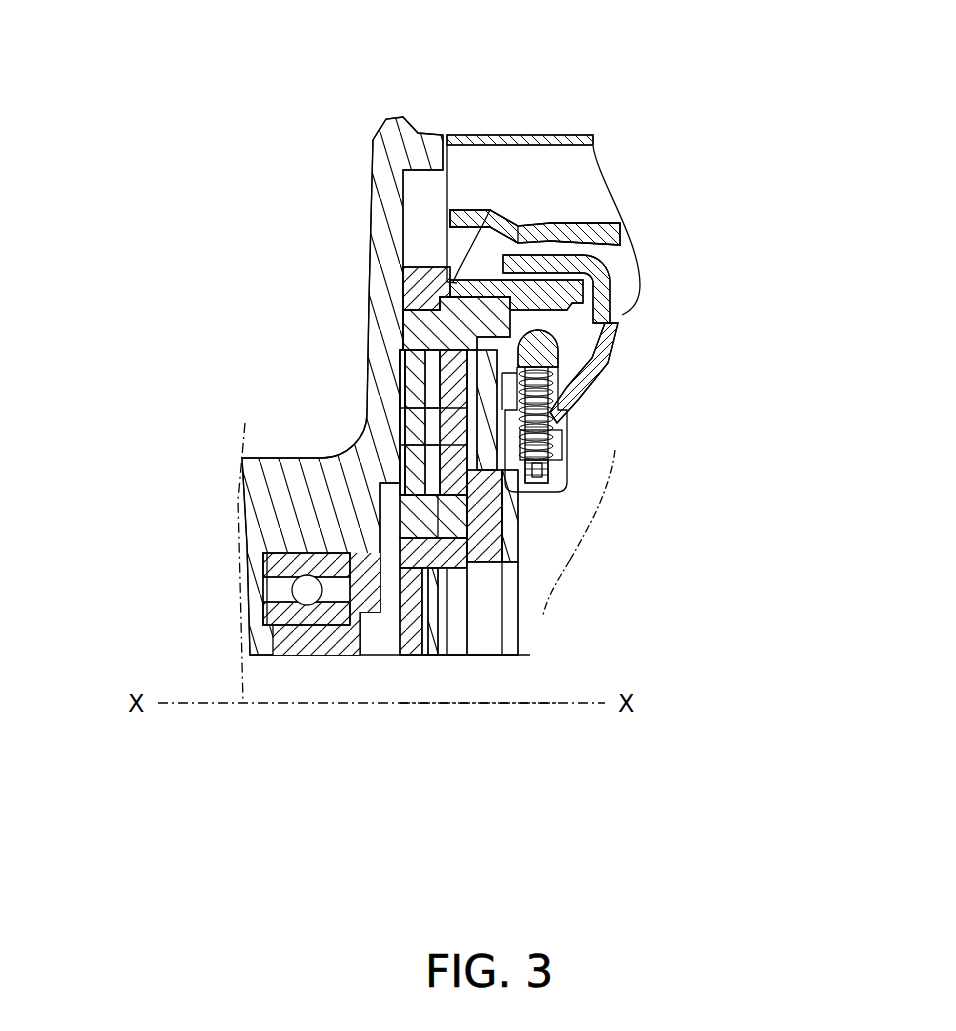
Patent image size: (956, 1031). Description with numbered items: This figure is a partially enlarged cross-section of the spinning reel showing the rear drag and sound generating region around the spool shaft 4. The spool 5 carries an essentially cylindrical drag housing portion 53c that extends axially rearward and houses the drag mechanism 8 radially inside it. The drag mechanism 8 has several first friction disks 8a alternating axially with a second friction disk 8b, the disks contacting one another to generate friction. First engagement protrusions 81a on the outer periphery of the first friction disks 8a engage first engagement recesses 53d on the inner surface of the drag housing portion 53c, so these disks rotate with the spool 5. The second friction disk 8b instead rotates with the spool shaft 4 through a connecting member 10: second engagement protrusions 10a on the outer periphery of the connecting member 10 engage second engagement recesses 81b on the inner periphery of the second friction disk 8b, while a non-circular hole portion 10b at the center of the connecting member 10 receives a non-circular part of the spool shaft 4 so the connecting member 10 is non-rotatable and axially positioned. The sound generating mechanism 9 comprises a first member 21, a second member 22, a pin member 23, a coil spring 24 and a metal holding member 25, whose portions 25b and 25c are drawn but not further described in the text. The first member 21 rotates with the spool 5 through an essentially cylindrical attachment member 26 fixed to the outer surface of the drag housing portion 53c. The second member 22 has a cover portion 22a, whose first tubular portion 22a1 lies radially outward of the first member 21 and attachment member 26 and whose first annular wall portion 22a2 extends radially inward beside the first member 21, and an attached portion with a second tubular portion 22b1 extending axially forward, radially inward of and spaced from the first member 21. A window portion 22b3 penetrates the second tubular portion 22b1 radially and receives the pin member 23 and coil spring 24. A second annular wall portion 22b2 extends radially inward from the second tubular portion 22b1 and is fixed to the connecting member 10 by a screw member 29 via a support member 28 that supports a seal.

The spool shaft 4 is at (478, 694).
The spool 5 is at (376, 111).
The drag mechanism 8 is at (143, 388).
The first friction disks 8a is at (400, 438).
The second friction disk 8b is at (400, 483).
The sound generating mechanism 9 is at (528, 246).
The connecting member 10 is at (388, 656).
The second engagement protrusions 10a is at (495, 575).
The hole portion 10b is at (365, 658).
The first member 21 is at (560, 318).
The second member 22 is at (586, 392).
The cover portion 22a is at (673, 48).
The first tubular portion 22a1 is at (553, 262).
The first annular wall portion 22a2 is at (537, 700).
The second tubular portion 22b1 is at (552, 417).
The second annular wall portion 22b2 is at (500, 548).
The window portion 22b3 is at (548, 510).
The pin member 23 is at (585, 405).
The coil spring 24 is at (558, 450).
The holding member 25 is at (564, 484).
The spring 25b is at (550, 457).
The seat projection 25c is at (548, 490).
The attachment member 26 is at (490, 210).
The support member 28 is at (410, 555).
The screw member 29 is at (528, 528).
The drag housing portion 53c is at (415, 293).
The first engagement recesses 53d is at (385, 380).
The first engagement protrusions 81a is at (395, 388).
The second engagement recesses 81b is at (400, 497).